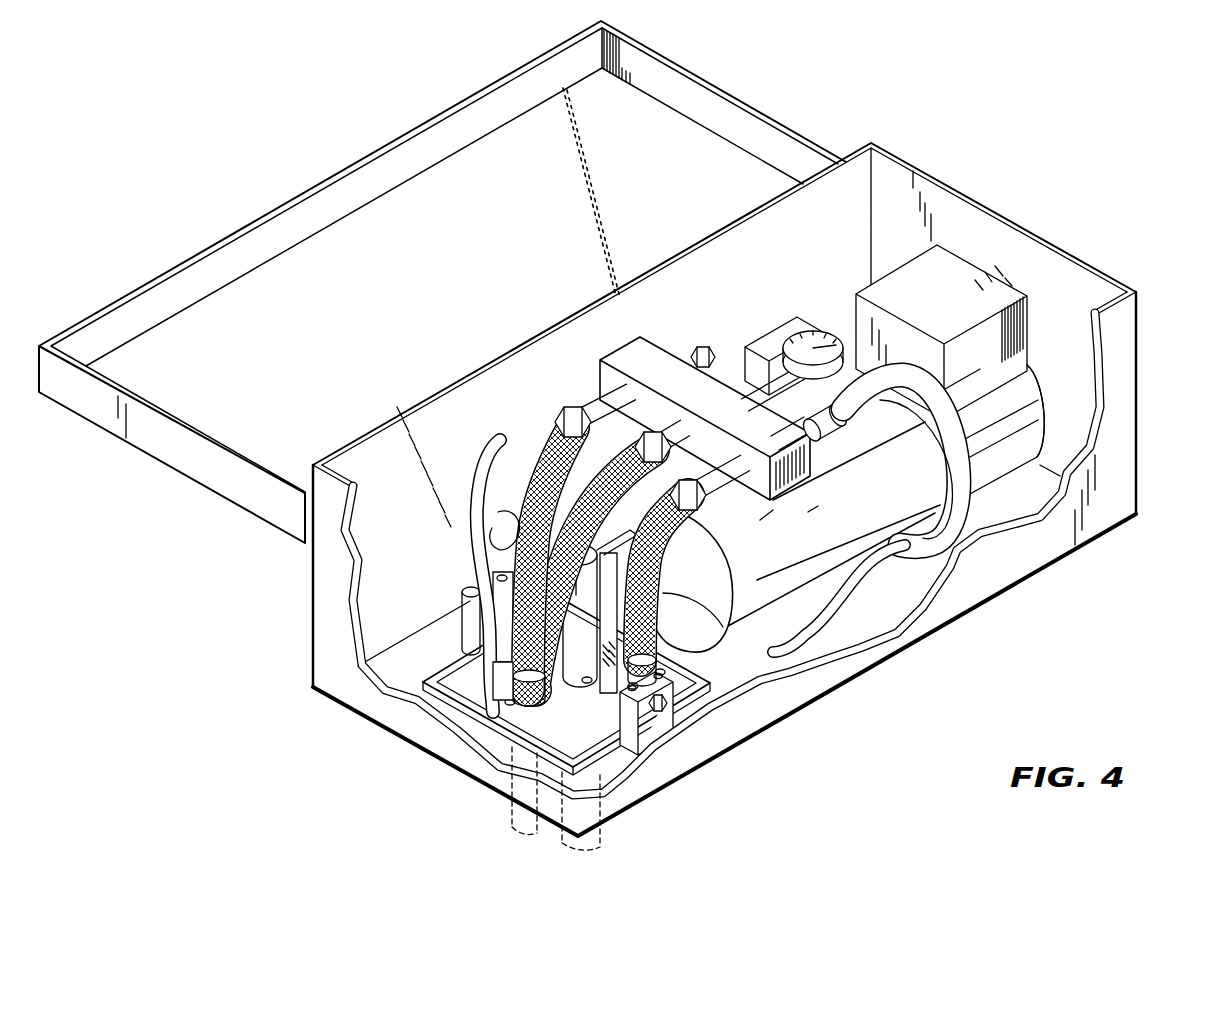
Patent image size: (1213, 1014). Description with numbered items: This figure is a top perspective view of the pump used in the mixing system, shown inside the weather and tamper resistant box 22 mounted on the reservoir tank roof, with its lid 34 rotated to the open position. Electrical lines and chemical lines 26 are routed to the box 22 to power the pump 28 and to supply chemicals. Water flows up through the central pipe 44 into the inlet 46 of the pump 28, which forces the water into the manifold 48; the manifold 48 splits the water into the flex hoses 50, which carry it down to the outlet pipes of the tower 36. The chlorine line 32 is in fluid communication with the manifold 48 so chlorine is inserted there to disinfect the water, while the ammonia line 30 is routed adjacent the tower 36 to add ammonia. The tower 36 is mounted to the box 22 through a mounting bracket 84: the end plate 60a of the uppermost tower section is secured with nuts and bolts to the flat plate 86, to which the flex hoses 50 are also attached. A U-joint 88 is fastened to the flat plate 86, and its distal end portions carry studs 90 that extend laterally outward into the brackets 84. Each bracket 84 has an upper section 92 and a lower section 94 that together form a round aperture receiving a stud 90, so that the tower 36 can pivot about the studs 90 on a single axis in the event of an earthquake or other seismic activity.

The box 22 is at (910, 103).
The electrical lines and chemical lines 26 is at (480, 475).
The pump 28 is at (759, 550).
The ammonia line 30 is at (464, 523).
The chlorine line 32 is at (1040, 395).
The lid 34 is at (421, 299).
The tower 36 is at (490, 786).
The central pipe 44 is at (500, 735).
The inlet 46 is at (595, 818).
The manifold 48 is at (655, 357).
The flex hoses 50 is at (557, 427).
The end plate 60a is at (498, 769).
The mounting bracket 84 is at (440, 641).
The flat plate 86 is at (463, 753).
The U-joint 88 is at (521, 807).
The studs 90 is at (705, 770).
The upper section 92 is at (705, 680).
The lower section 94 is at (700, 735).